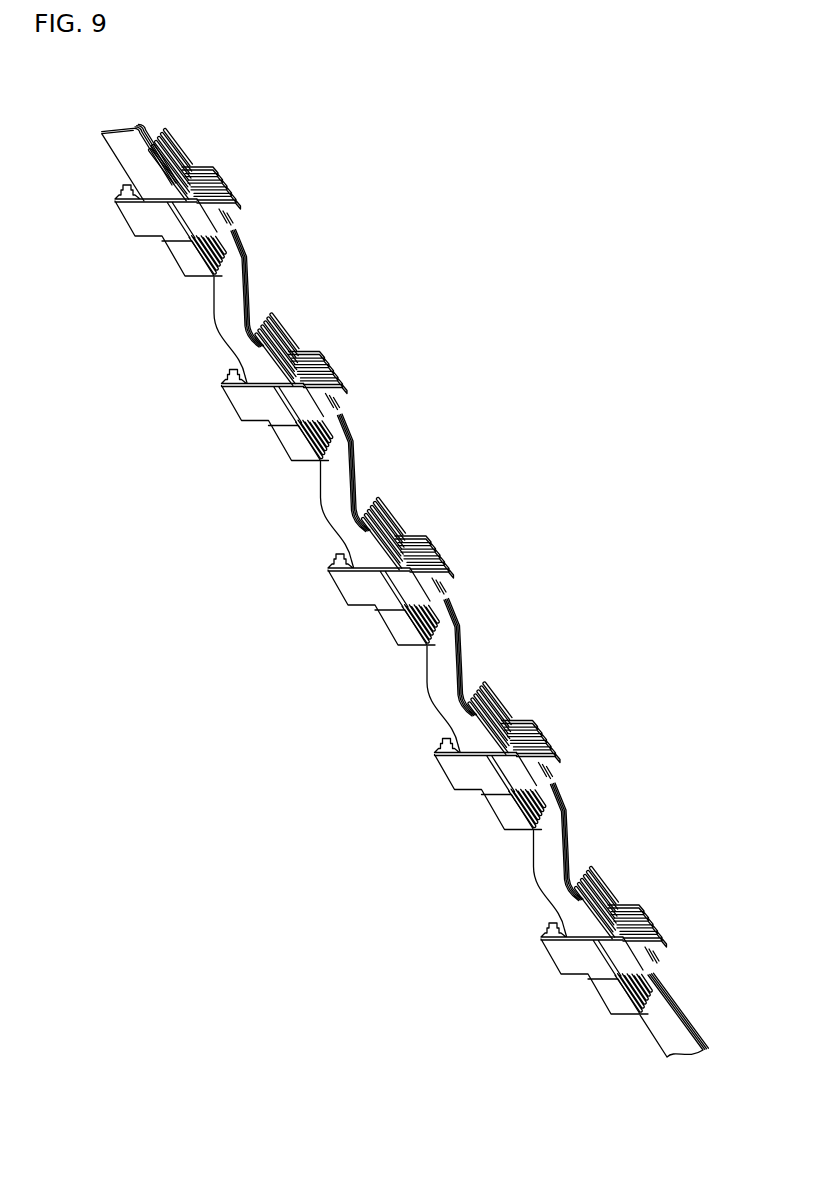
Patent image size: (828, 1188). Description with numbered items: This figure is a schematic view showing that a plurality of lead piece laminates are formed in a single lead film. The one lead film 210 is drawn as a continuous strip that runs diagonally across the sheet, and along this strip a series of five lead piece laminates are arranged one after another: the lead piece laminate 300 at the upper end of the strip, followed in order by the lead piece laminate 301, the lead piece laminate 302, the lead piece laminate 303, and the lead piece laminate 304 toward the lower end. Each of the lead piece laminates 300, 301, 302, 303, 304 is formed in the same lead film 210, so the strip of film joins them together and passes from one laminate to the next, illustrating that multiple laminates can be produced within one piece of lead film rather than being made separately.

The lead film 210 is at (118, 157).
The lead piece laminate 300 is at (200, 190).
The lead piece laminate 301 is at (307, 375).
The lead piece laminate 302 is at (413, 559).
The lead piece laminate 303 is at (520, 744).
The lead piece laminate 304 is at (626, 928).